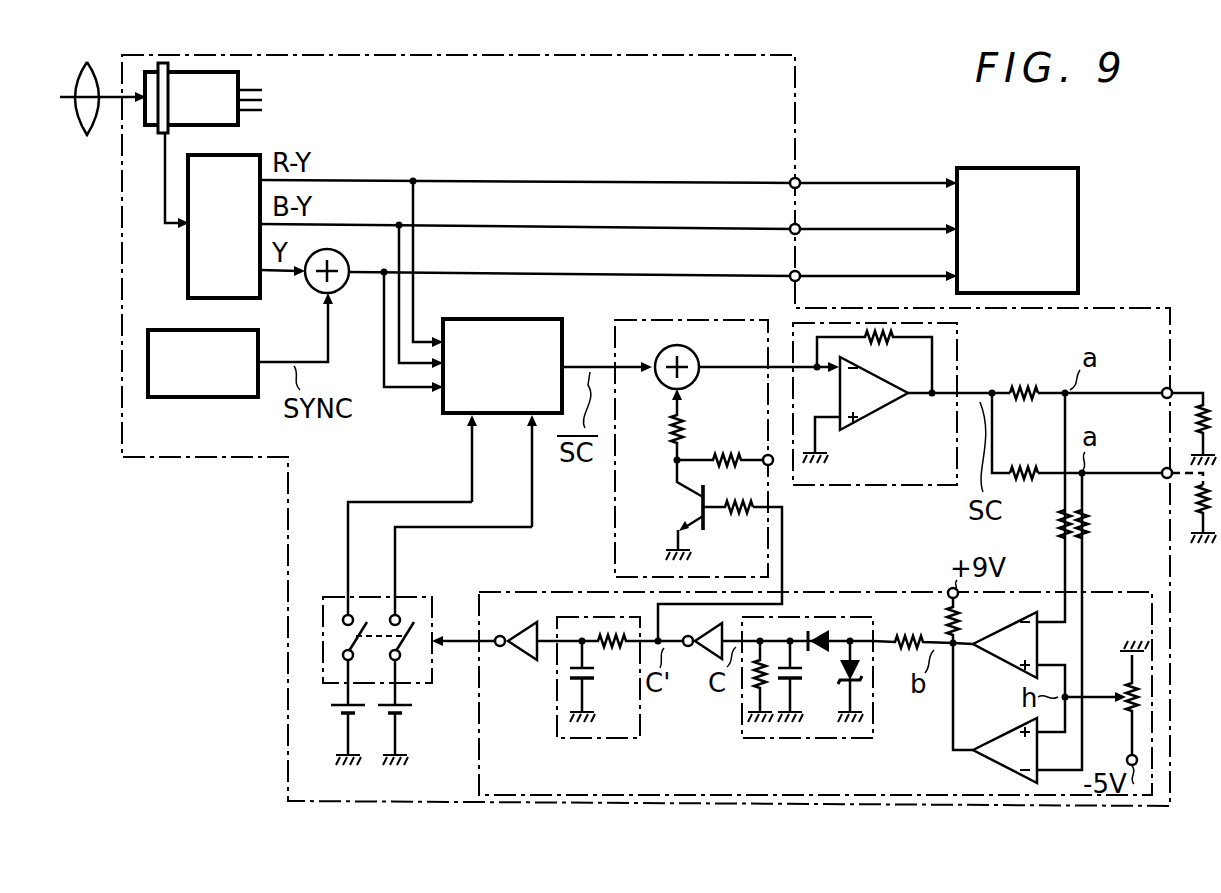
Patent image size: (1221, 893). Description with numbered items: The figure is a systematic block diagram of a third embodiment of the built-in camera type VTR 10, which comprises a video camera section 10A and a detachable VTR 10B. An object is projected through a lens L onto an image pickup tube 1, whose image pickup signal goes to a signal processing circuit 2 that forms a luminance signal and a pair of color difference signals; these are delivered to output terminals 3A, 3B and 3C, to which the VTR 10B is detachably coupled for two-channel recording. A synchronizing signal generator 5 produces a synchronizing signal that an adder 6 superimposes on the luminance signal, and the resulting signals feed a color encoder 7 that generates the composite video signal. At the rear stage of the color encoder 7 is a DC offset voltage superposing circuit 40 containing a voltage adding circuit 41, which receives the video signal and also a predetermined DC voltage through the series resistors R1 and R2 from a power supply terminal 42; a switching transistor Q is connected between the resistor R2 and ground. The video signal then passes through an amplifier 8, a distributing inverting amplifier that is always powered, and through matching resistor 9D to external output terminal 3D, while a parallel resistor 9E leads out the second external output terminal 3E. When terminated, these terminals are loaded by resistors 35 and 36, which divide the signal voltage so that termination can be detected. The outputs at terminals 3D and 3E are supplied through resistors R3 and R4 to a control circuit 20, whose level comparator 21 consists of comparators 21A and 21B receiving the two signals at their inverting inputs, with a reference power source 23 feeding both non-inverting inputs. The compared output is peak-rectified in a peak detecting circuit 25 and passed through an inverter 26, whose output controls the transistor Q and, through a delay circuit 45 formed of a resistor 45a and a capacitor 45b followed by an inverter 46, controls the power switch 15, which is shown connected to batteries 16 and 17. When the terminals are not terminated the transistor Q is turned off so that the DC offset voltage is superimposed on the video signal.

The image pickup tube 1 is at (242, 77).
The signal processing circuit 2 is at (186, 282).
The synchronizing signal generator 5 is at (200, 398).
The adder 6 is at (337, 292).
The color encoder 7 is at (489, 319).
The amplifier 8 is at (893, 487).
The matching resistor 9D is at (1020, 390).
The resistor 9E is at (1020, 470).
The built-in camera type VTR 10 is at (903, 132).
The video camera section 10A is at (888, 89).
The VTR 10B is at (1172, 266).
The power switch 15 is at (417, 597).
The battery 16 is at (338, 712).
The battery 17 is at (400, 713).
The control circuit 20 is at (885, 576).
The level comparator 21 is at (978, 697).
The comparator 21A is at (981, 643).
The comparator 21B is at (986, 762).
The reference power source 23 is at (1117, 701).
The peak detecting circuit 25 is at (842, 740).
The inverter 26 is at (702, 657).
The resistor 35 is at (1203, 404).
The resistor 36 is at (1197, 505).
The DC offset voltage superposing circuit 40 is at (728, 310).
The voltage adding circuit 41 is at (700, 356).
The power supply terminal 42 is at (772, 466).
The delay circuit 45 is at (575, 701).
The resistor 45a is at (612, 654).
The capacitor 45b is at (570, 690).
The inverter 46 is at (510, 660).
The output terminal 3A is at (802, 183).
The output terminal 3B is at (802, 229).
The output terminal 3C is at (802, 276).
The external output terminal 3D is at (1160, 390).
The external output terminal 3E is at (1160, 470).
The lens L is at (96, 122).
The switching transistor Q is at (706, 520).
The resistor R1 is at (718, 456).
The resistor R2 is at (670, 424).
The resistor R3 is at (1086, 514).
The resistor R4 is at (1062, 514).